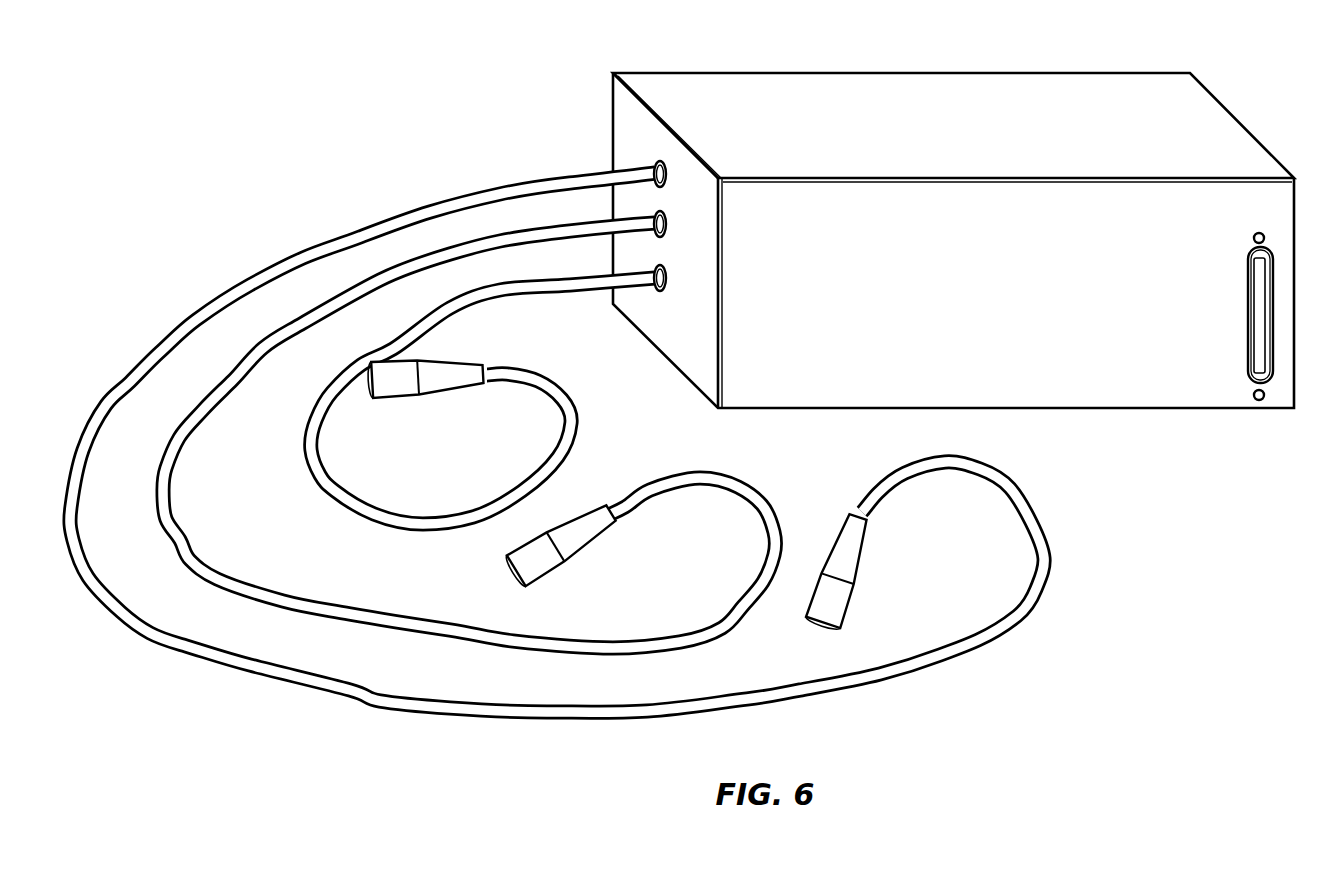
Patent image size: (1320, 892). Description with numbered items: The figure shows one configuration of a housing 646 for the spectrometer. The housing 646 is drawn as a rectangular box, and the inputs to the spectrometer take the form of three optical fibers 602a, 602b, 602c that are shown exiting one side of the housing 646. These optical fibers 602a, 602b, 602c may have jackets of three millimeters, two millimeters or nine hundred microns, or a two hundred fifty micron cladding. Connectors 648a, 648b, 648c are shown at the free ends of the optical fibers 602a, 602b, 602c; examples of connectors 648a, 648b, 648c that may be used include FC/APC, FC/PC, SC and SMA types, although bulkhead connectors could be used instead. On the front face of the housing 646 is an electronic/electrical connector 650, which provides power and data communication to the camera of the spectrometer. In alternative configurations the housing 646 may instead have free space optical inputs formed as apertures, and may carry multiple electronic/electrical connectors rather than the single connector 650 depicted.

The optical fiber 602a is at (452, 197).
The optical fiber 602b is at (168, 470).
The optical fiber 602c is at (553, 297).
The housing 646 is at (1170, 410).
The connector 648a is at (848, 592).
The connector 648b is at (558, 568).
The connector 648c is at (408, 393).
The electronic/electrical connector 650 is at (1270, 383).